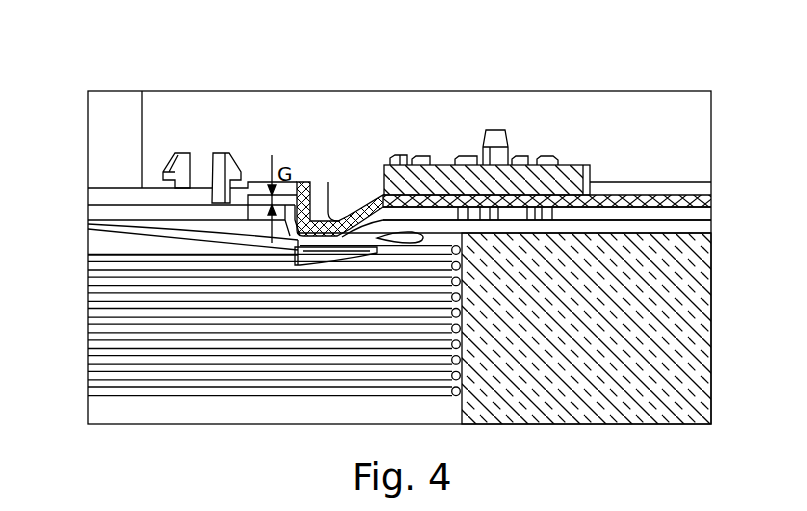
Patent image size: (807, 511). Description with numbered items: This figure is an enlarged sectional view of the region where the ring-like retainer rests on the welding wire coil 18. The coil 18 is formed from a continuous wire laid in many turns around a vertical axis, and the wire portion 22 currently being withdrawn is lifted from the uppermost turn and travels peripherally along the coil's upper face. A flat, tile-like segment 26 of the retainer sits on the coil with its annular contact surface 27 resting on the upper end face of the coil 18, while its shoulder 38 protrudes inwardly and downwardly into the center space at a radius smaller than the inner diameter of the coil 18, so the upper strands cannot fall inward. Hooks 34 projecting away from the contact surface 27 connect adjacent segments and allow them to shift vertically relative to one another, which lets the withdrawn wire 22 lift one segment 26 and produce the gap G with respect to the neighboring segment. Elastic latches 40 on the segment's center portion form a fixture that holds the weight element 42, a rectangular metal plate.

The welding wire coil 18 is at (663, 340).
The withdrawn wire portion 22 is at (150, 235).
The segment 26 is at (650, 198).
The contact surface 27 is at (680, 208).
The hook 34 is at (168, 158).
The shoulder 38 is at (328, 205).
The elastic latch 40 is at (560, 180).
The weight element 42 is at (563, 163).